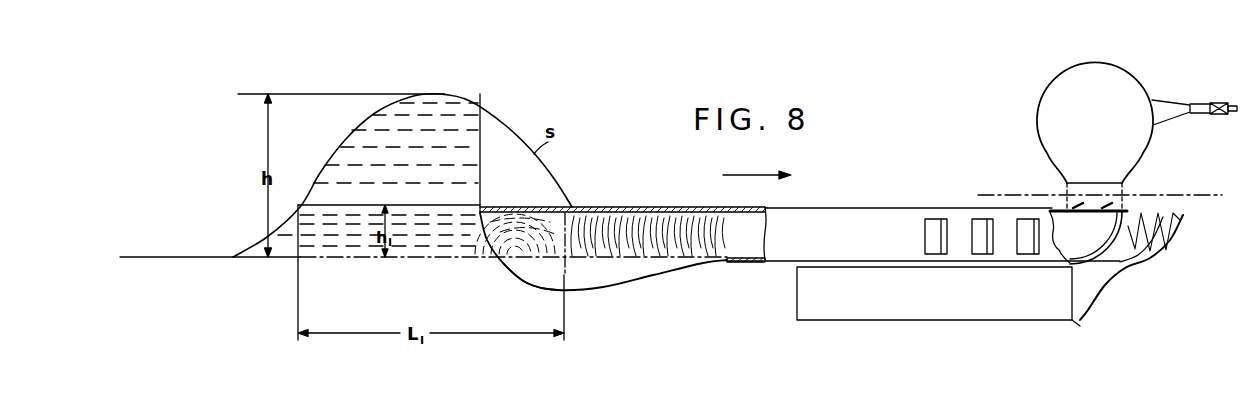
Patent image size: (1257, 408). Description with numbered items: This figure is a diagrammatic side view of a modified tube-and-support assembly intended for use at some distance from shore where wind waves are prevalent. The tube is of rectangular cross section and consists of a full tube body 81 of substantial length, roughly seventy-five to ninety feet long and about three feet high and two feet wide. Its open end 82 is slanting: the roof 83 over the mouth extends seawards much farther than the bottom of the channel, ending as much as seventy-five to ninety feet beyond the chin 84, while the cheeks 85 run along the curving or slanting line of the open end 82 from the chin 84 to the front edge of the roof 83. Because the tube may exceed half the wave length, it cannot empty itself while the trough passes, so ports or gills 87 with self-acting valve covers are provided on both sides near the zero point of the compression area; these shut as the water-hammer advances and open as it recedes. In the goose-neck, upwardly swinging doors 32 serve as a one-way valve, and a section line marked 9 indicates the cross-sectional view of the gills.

The full tube body 81 is at (839, 216).
The open end 82 is at (553, 290).
The roof 83 is at (586, 207).
The chin 84 is at (728, 263).
The cheeks 85 is at (599, 279).
The ports or gills 87 is at (936, 248).
The upwardly swinging doors 32 is at (1105, 205).
The section line 9 is at (989, 194).